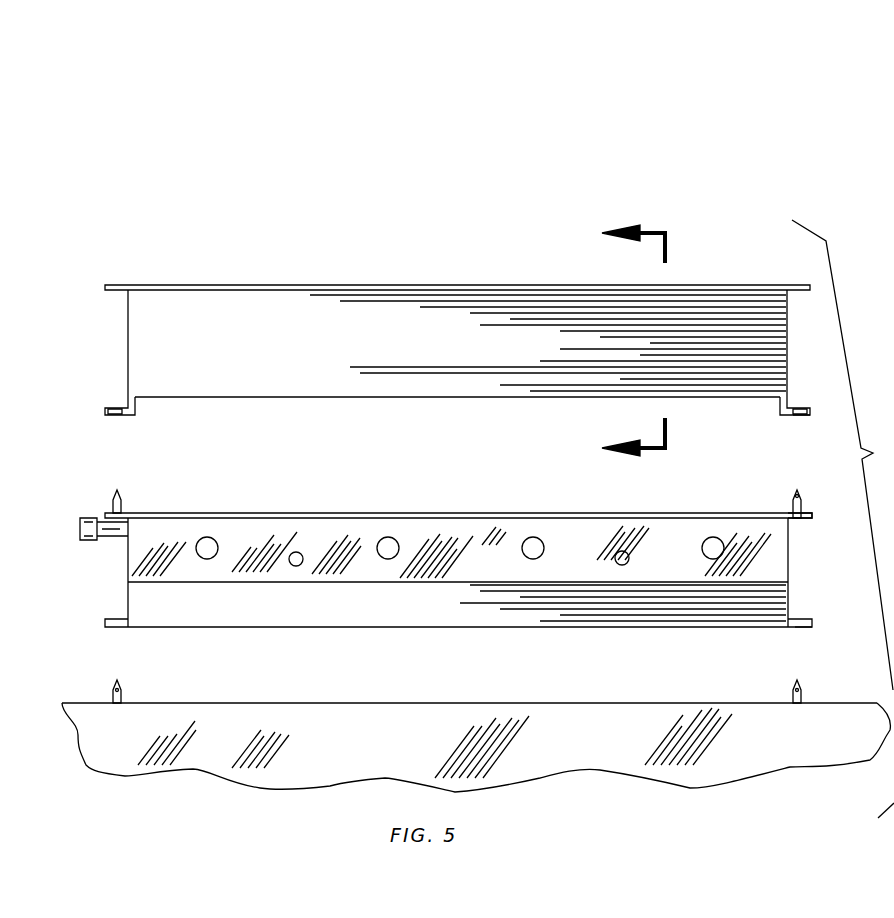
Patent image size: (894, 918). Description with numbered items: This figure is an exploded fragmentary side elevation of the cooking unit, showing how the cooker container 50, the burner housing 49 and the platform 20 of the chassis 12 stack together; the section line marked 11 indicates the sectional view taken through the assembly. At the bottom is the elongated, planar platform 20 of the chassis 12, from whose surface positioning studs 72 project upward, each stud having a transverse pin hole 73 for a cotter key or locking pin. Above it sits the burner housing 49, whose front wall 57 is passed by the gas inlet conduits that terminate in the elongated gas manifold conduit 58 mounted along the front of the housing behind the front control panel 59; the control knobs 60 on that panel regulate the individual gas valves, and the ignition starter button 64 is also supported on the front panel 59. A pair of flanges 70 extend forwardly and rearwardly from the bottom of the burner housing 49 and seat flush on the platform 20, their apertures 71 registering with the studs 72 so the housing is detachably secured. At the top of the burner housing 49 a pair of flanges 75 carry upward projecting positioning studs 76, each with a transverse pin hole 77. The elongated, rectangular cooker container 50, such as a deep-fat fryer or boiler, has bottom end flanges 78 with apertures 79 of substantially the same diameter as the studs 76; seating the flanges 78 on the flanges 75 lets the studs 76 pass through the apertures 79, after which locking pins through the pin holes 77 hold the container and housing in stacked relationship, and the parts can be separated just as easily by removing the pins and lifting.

The section line 11- 11 is at (652, 340).
The chassis 12 is at (741, 755).
The platform 20 is at (458, 703).
The burner housing 49 is at (320, 502).
The cooker container 50 is at (705, 277).
The front wall 57 is at (316, 609).
The gas manifold conduit 58 is at (108, 545).
The front control panel 59 is at (589, 573).
The control knob 60 is at (525, 538).
The ignition starter button 64 is at (620, 551).
The flange 70 is at (790, 618).
The aperture 71 is at (806, 632).
The positioning stud 72 is at (115, 686).
The pin hole 73 is at (121, 690).
The flange 75 is at (800, 520).
The positioning stud 76 is at (115, 493).
The pin hole 77 is at (803, 499).
The bottom end flange 78 is at (125, 404).
The aperture 79 is at (800, 418).